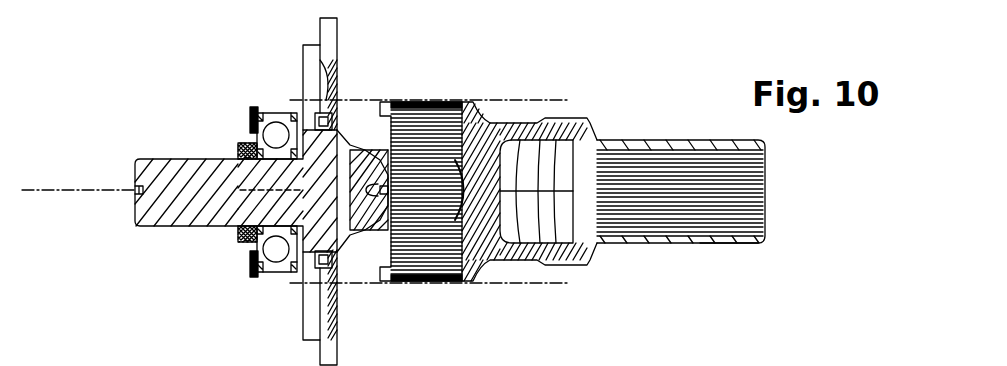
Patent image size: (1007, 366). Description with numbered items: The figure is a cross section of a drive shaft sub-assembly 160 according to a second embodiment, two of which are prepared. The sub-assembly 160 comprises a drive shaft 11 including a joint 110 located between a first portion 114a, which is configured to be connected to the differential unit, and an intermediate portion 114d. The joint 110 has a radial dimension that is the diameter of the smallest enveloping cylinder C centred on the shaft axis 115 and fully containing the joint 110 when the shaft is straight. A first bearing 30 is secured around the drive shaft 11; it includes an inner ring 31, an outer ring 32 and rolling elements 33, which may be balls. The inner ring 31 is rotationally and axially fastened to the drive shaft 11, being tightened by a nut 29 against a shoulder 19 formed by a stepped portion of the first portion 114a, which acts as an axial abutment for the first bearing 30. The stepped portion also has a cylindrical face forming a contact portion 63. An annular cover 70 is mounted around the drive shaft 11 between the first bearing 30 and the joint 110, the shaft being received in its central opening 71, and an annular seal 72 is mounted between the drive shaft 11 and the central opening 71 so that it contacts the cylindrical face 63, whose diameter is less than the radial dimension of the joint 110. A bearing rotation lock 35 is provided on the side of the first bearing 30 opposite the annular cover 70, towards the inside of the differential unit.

The drive shaft sub-assembly 160 is at (109, 75).
The first portion 114a is at (163, 168).
The axis of rotation 115 is at (40, 190).
The nut 29 is at (246, 143).
The bearing rotation lock 35 is at (253, 107).
The first bearing 30 is at (277, 99).
The outer ring 32 is at (277, 276).
The rolling elements 33 is at (248, 250).
The inner ring 31 is at (253, 203).
The shoulder 19 is at (312, 160).
The annular cover 70 is at (330, 38).
The central opening 71 is at (340, 120).
The annular seal 72 is at (335, 262).
The contact portion 63 is at (366, 168).
The joint 110 is at (425, 88).
The enveloping cylinder C is at (530, 100).
The drive shaft 11 is at (636, 125).
The intermediate portion 114d is at (745, 244).